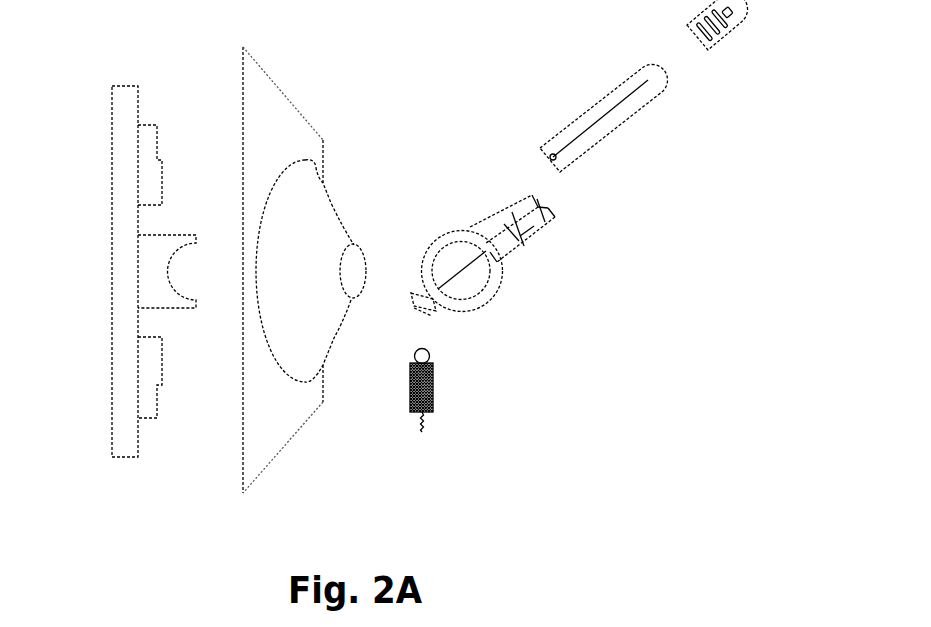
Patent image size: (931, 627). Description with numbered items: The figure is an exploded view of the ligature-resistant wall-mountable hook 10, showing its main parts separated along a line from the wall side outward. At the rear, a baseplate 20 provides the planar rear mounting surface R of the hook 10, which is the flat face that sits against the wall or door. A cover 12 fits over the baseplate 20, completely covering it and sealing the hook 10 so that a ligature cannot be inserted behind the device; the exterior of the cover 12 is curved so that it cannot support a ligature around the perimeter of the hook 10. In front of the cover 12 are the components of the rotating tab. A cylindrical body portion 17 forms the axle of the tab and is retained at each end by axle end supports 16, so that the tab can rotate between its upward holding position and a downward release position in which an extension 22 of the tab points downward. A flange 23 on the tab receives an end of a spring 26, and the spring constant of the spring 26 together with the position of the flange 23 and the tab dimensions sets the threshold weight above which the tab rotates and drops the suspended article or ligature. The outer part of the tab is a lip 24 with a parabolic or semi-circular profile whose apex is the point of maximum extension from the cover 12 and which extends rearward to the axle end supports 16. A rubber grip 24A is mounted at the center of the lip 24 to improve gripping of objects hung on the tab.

The ligature-resistant wall-mountable hook 10 is at (722, 181).
The cover 12 is at (316, 270).
The axle end supports 16 is at (360, 249).
The cylindrical body portion 17 is at (496, 293).
The baseplate 20 is at (129, 267).
The extension 22 is at (547, 226).
The flange 23 is at (422, 310).
The lip 24 is at (645, 100).
The rubber grip 24A is at (733, 32).
The spring 26 is at (433, 383).
The planar rear mounting surface R is at (112, 388).